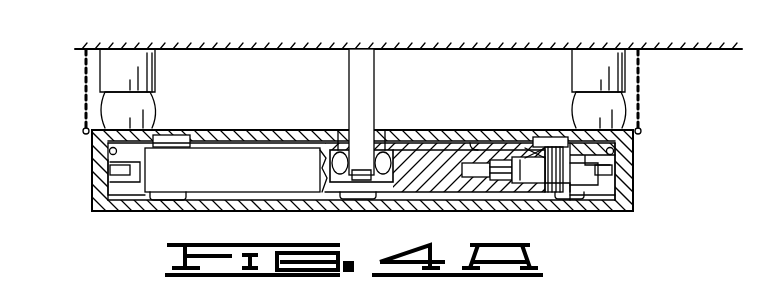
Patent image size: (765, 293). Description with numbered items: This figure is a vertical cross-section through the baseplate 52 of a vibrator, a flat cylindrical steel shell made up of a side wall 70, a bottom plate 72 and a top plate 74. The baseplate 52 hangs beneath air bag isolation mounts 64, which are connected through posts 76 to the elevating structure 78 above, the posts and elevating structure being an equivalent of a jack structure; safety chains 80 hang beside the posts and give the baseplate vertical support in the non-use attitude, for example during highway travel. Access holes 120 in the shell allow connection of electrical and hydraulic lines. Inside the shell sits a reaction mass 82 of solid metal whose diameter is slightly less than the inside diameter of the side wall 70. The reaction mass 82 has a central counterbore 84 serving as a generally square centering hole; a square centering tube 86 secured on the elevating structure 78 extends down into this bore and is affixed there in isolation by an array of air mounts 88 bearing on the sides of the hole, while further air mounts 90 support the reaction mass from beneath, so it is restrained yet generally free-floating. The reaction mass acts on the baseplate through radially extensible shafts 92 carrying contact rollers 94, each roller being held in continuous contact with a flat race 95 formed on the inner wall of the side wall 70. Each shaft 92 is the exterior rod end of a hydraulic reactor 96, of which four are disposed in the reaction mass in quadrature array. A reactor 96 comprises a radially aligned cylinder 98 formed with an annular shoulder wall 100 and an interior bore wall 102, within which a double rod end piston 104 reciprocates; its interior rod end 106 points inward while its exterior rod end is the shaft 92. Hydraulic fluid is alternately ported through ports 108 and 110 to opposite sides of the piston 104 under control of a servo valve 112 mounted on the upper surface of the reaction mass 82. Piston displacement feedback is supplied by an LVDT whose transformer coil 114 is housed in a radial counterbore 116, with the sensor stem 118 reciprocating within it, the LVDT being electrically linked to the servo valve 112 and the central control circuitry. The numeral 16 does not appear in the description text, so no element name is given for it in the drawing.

The support box 16 is at (598, 58).
The baseplate 52 is at (636, 146).
The air bag isolation mount 64 is at (132, 108).
The side wall 70 is at (634, 176).
The bottom plate 72 is at (610, 211).
The top plate 74 is at (443, 130).
The post 76 is at (125, 68).
The elevating structure 78 is at (500, 46).
The safety chain 80 is at (85, 85).
The reaction mass 82 is at (264, 189).
The central counterbore 84 is at (370, 185).
The square centering tube 86 is at (376, 70).
The air mount 88 is at (340, 140).
The air mount 90 is at (160, 196).
The radially extensible shaft 92 is at (135, 175).
The contact roller 94 is at (110, 170).
The flat race 95 is at (109, 152).
The hydraulic reactor 96 is at (538, 137).
The cylinder 98 is at (562, 196).
The annular shoulder wall 100 is at (582, 150).
The interior bore wall 102 is at (475, 148).
The double rod end piston 104 is at (553, 146).
The interior rod end 106 is at (536, 186).
The port 108 is at (530, 147).
The port 110 is at (557, 146).
The servo valve 112 is at (549, 146).
The LVDT transformer coil 114 is at (470, 178).
The radial counterbore 116 is at (495, 181).
The sensor stem 118 is at (515, 183).
The access hole 120 is at (195, 130).